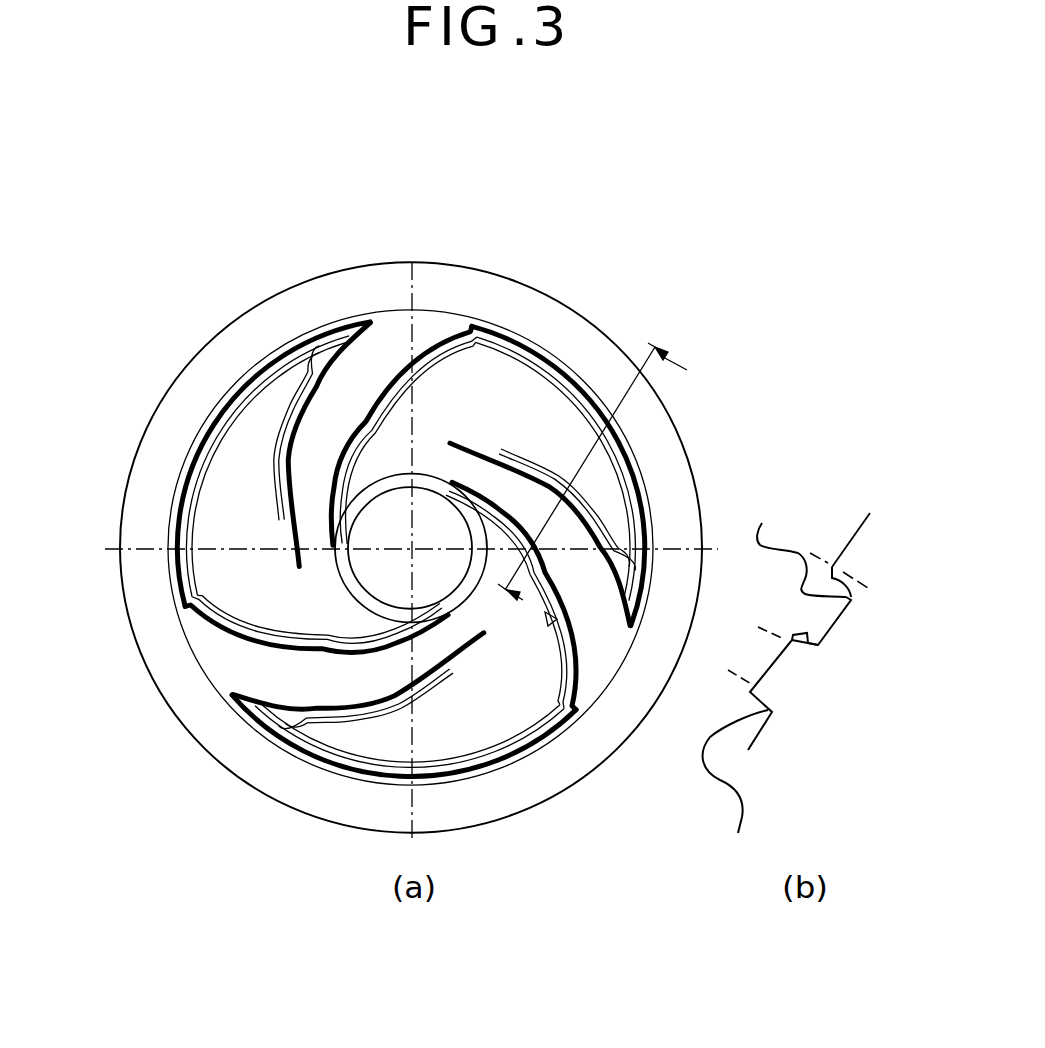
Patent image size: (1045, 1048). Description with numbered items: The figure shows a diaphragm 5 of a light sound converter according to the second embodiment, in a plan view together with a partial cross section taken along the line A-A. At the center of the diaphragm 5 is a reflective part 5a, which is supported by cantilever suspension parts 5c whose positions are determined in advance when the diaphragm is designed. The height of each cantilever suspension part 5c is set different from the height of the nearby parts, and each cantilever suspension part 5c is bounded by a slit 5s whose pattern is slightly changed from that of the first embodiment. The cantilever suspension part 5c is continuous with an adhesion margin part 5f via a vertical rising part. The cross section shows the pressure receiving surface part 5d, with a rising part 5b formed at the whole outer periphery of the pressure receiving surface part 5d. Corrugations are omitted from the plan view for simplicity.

The diaphragm 5 is at (158, 393).
The reflective part 5a is at (388, 522).
The rising part 5b is at (774, 677).
The cantilever suspension part 5c is at (366, 374).
The pressure receiving surface part 5d is at (503, 413).
The adhesion margin part 5f is at (652, 444).
The slit 5s is at (450, 344).